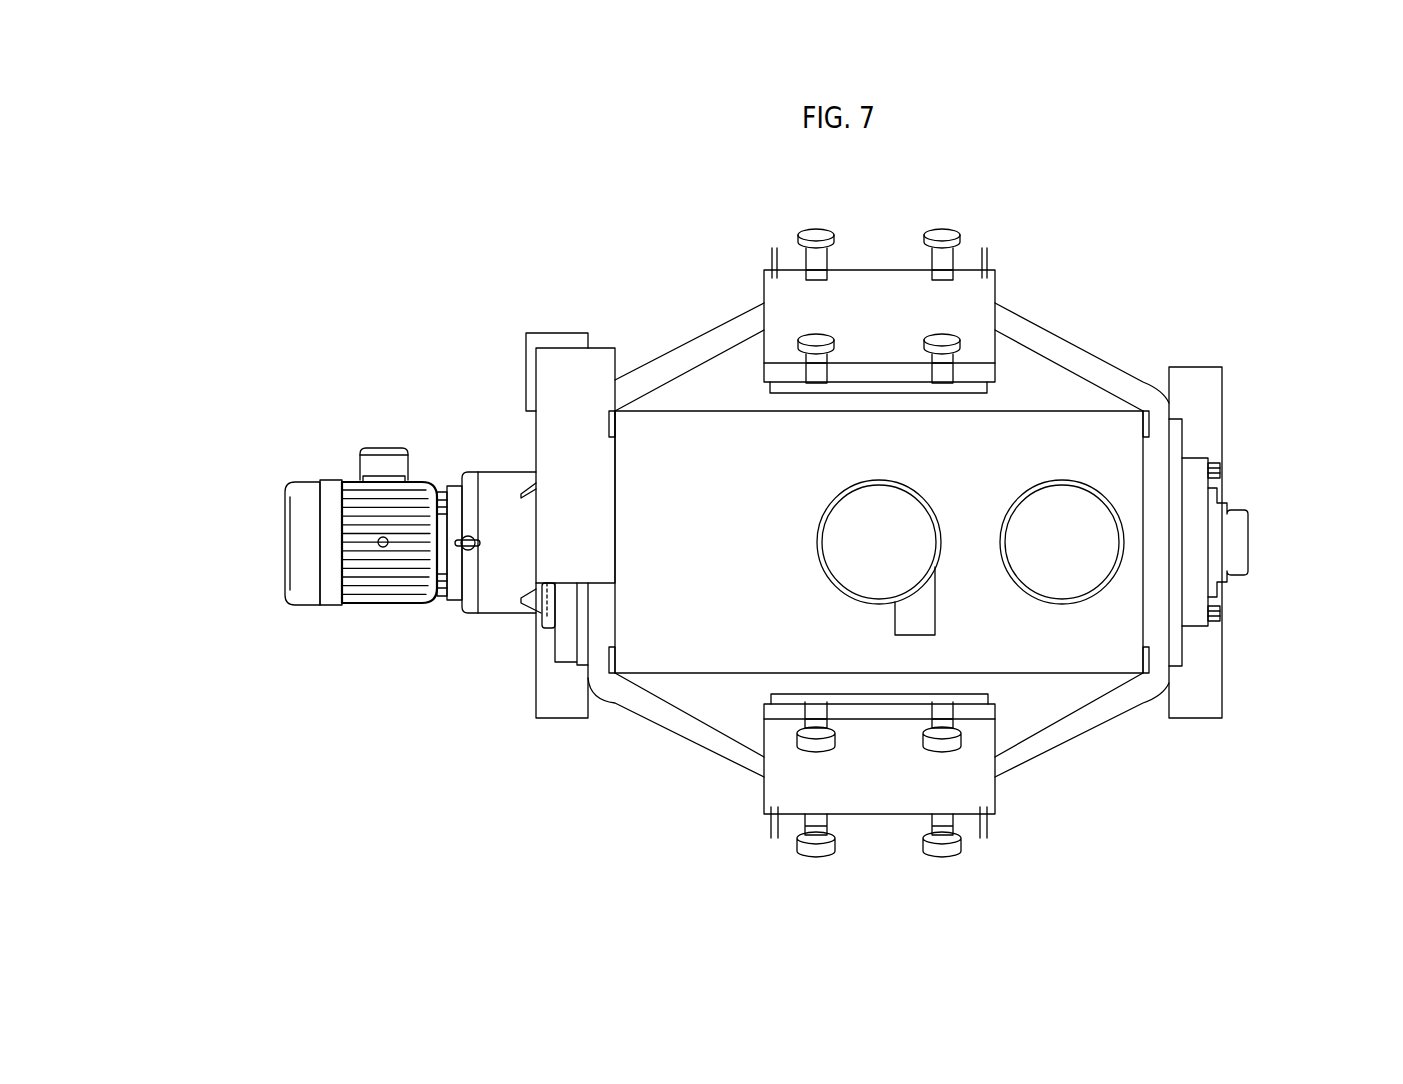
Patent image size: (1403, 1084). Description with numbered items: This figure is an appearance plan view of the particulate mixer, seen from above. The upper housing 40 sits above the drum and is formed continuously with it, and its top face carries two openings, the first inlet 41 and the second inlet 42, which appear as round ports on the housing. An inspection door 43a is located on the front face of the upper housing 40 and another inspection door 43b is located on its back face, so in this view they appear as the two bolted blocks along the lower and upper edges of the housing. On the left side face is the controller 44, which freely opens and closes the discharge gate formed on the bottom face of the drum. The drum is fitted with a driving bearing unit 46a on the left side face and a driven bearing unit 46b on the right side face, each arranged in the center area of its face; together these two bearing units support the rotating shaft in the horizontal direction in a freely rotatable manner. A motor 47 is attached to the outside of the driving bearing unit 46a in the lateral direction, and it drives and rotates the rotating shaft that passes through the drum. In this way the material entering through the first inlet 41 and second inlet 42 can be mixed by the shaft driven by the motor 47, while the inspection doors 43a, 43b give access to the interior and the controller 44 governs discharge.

The upper housing 40 is at (743, 360).
The first inlet 41 is at (880, 500).
The second inlet 42 is at (1045, 500).
The inspection door 43a is at (787, 784).
The inspection door 43b is at (978, 300).
The controller 44 is at (572, 463).
The driving bearing unit 46a is at (563, 638).
The driven bearing unit 46b is at (1213, 518).
The motor 47 is at (402, 583).